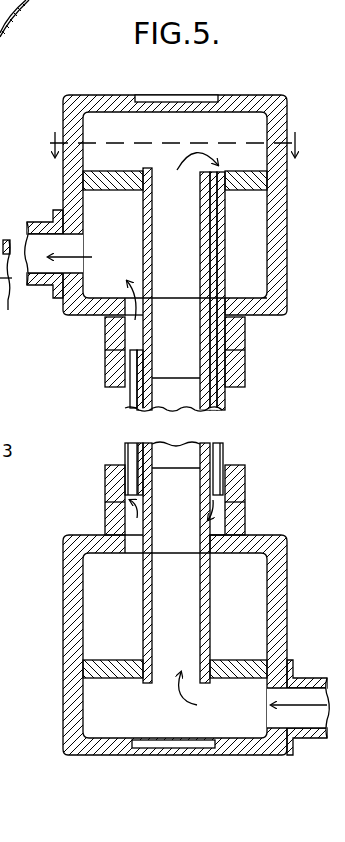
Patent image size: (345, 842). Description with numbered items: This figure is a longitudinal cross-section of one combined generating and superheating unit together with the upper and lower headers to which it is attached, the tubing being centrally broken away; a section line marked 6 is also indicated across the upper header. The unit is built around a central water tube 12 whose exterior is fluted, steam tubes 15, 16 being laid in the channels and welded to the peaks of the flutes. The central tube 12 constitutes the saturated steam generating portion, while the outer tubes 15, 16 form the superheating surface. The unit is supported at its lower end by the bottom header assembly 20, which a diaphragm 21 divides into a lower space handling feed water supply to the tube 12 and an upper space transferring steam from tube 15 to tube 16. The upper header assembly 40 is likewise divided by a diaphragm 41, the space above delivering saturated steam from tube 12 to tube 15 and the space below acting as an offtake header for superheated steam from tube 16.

The section line 6- 6 is at (173, 144).
The central water tube 12 is at (192, 444).
The steam tube 15 is at (222, 454).
The steam tube 16 is at (123, 402).
The bottom header assembly 20 is at (70, 623).
The diaphragm 21 is at (115, 663).
The upper header assembly 40 is at (68, 203).
The diaphragm 41 is at (118, 176).